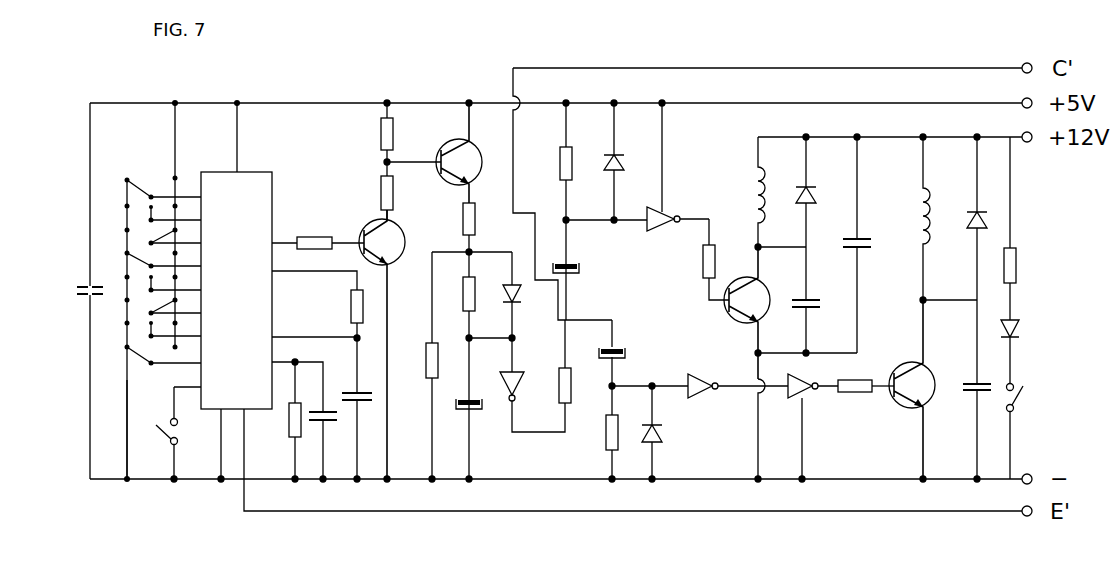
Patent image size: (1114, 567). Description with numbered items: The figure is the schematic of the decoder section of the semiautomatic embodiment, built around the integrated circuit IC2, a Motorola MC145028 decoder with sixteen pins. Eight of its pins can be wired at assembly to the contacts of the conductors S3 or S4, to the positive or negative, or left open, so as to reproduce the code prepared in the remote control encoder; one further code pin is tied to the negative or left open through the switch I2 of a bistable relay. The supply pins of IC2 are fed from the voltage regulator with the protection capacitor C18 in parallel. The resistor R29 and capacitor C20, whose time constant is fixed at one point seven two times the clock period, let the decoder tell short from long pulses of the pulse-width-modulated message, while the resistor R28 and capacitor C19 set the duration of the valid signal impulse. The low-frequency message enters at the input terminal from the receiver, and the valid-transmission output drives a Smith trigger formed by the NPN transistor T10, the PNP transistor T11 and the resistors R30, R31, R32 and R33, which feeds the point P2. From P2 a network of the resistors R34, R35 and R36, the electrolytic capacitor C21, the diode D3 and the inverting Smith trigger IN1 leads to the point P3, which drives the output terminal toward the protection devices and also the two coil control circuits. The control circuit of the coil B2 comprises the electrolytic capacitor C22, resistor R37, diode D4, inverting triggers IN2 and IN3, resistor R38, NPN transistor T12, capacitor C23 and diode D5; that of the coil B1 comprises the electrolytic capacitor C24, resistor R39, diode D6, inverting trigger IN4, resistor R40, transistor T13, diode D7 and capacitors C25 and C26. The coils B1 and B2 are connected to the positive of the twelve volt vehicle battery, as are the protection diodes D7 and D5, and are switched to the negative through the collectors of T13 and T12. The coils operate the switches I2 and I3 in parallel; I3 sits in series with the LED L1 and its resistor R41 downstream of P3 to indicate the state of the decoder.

The integrated circuit IC2 is at (211, 325).
The conductor contacts S3 is at (153, 310).
The conductor contacts S4 is at (112, 429).
The protection capacitor C18 is at (72, 298).
The switch I2 is at (184, 434).
The resistor R28 is at (259, 420).
The resistor R29 is at (317, 306).
The resistor R30 is at (318, 227).
The resistor R31 is at (362, 190).
The resistor R32 is at (386, 131).
The resistor R33 is at (467, 228).
The resistor R34 is at (476, 325).
The resistor R35 is at (415, 367).
The resistor R36 is at (544, 373).
The resistor R37 is at (594, 434).
The resistor R38 is at (861, 404).
The resistor R39 is at (583, 161).
The resistor R40 is at (697, 259).
The resistor R41 is at (1043, 228).
The capacitor C19 is at (311, 422).
The capacitor C20 is at (350, 410).
The electrolytic capacitor C21 is at (463, 440).
The electrolytic capacitor C22 is at (650, 363).
The capacitor C23 is at (959, 410).
The electrolytic capacitor C24 is at (595, 270).
The capacitor C25 is at (808, 328).
The capacitor C26 is at (877, 243).
The NPN transistor T10 is at (400, 346).
The PNP transistor T11 is at (449, 151).
The NPN transistor T12 is at (932, 389).
The PNP transistor T13 is at (737, 364).
The circuit point P2 is at (497, 268).
The circuit point P3 is at (599, 354).
The diode D3 is at (531, 328).
The diode D4 is at (676, 434).
The protection diode D5 is at (962, 259).
The diode D6 is at (634, 161).
The protection diode D7 is at (828, 217).
The inverting Smith trigger IN1 is at (532, 383).
The inverting trigger IN2 is at (738, 402).
The inverting trigger IN3 is at (799, 428).
The inverting trigger IN4 is at (653, 174).
The control coil B1 is at (761, 193).
The control coil B2 is at (928, 217).
The LED L1 is at (1033, 351).
The switch I3 is at (1031, 432).